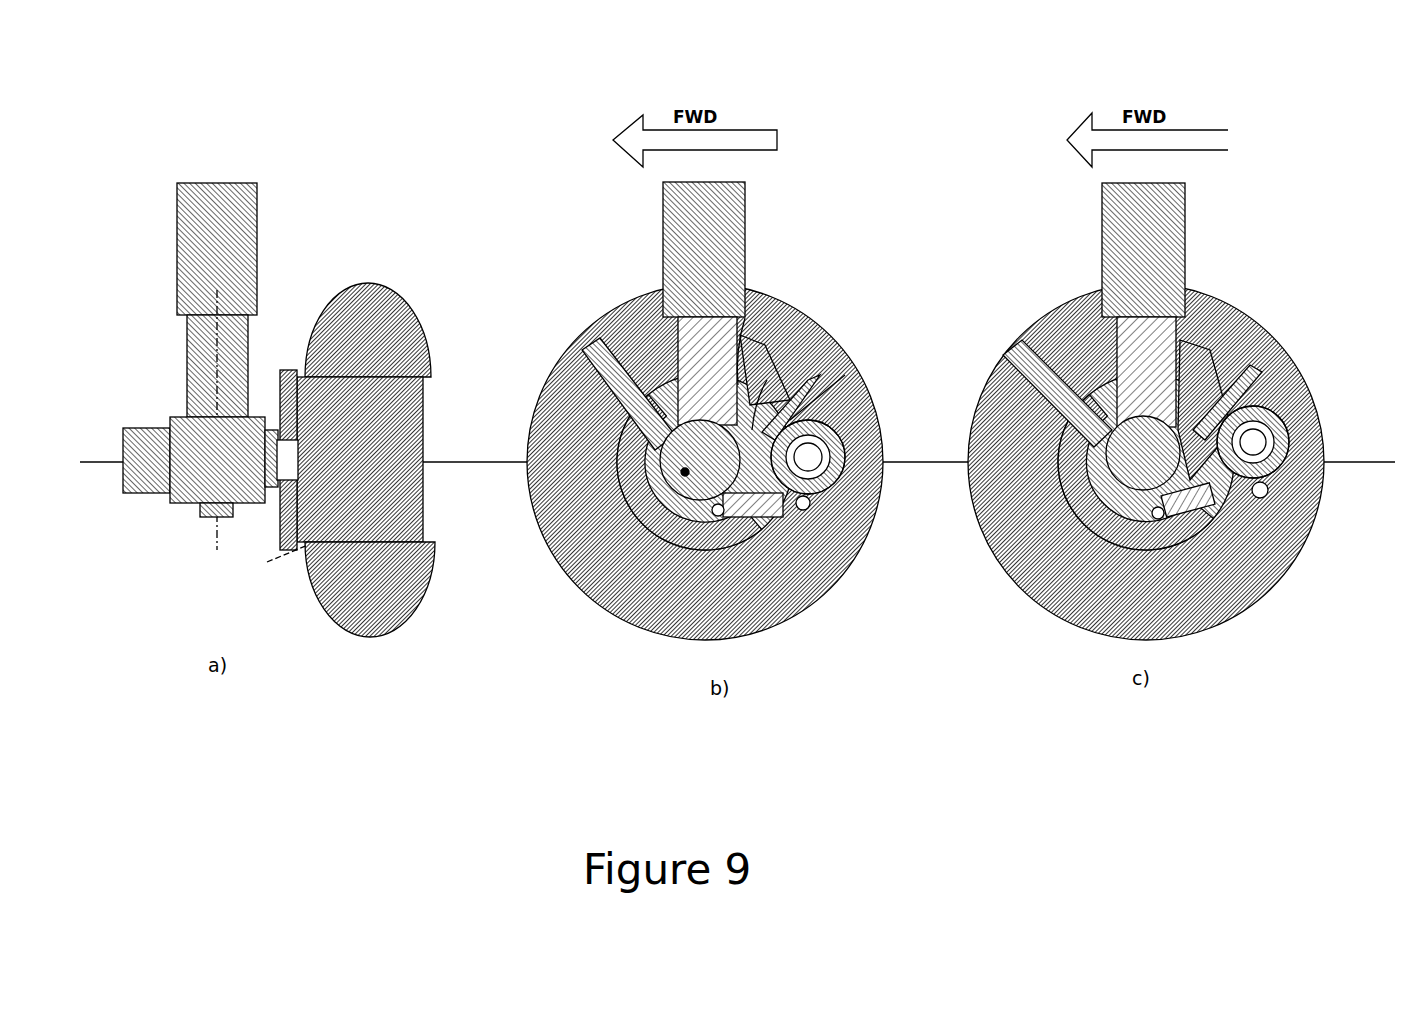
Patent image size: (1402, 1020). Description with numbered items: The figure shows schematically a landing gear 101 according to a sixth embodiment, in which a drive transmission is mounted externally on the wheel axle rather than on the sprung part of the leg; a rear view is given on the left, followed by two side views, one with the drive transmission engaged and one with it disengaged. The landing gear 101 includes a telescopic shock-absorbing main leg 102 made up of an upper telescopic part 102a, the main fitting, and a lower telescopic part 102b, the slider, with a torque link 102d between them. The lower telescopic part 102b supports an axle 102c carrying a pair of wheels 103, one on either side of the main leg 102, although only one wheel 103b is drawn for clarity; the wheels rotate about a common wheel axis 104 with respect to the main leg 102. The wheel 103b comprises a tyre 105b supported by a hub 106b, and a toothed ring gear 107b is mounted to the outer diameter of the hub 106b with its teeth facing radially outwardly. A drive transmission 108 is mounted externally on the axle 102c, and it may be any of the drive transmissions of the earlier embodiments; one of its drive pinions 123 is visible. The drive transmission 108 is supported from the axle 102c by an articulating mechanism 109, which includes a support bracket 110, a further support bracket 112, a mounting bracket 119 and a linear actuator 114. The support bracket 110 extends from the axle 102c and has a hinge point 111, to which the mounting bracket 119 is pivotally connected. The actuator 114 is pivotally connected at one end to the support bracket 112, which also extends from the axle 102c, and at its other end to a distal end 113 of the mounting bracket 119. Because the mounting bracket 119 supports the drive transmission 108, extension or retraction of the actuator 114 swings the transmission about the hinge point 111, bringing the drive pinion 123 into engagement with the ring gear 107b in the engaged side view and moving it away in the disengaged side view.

The landing gear 101 is at (357, 180).
The telescopic shock-absorbing main leg 102 is at (188, 197).
The upper telescopic part 102a is at (705, 287).
The lower telescopic part 102b is at (703, 348).
The axle 102c is at (597, 480).
The torque link 102d is at (610, 348).
The wheels 103 is at (378, 315).
The wheel 103b is at (367, 617).
The wheel axis 104 is at (100, 468).
The tyre 105b is at (388, 605).
The hub 106b is at (251, 571).
The toothed ring gear 107b is at (807, 383).
The drive transmission 108 is at (135, 488).
The articulating mechanism 109 is at (717, 540).
The support bracket 110 is at (745, 318).
The hinge point 111 is at (767, 380).
The support bracket 112 is at (647, 530).
The distal end 113 is at (803, 507).
The linear actuator 114 is at (767, 522).
The mounting bracket 119 is at (845, 375).
The drive pinion 123 is at (288, 452).